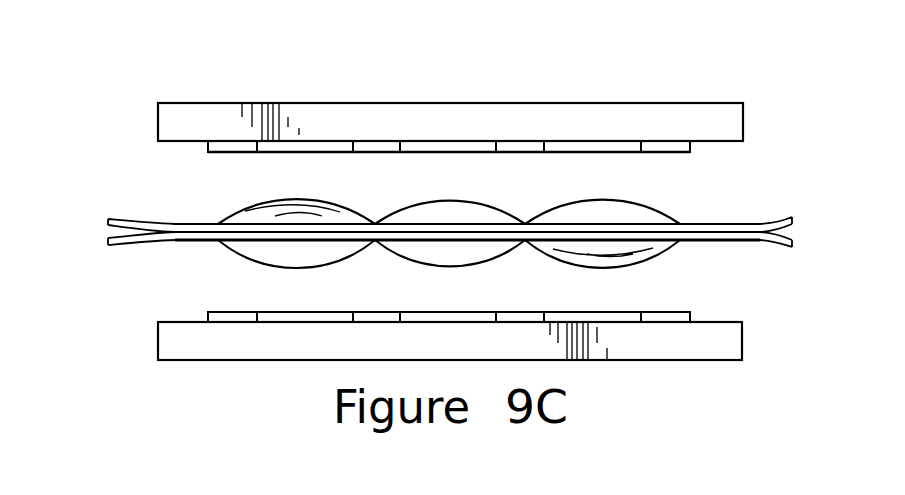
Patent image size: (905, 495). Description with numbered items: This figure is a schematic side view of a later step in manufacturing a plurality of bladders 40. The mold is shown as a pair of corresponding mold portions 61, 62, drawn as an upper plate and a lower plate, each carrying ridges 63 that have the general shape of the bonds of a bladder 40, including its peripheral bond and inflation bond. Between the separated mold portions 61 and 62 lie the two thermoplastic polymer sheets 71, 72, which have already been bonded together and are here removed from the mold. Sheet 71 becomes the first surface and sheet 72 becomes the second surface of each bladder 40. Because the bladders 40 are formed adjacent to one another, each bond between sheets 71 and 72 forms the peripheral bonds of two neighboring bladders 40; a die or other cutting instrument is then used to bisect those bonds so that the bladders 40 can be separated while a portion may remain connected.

The mold portion 61 is at (668, 101).
The mold portion 62 is at (680, 364).
The ridges 63 is at (228, 152).
The bladder 40 is at (300, 198).
The thermoplastic polymer sheet 71 is at (793, 222).
The thermoplastic polymer sheet 72 is at (108, 242).